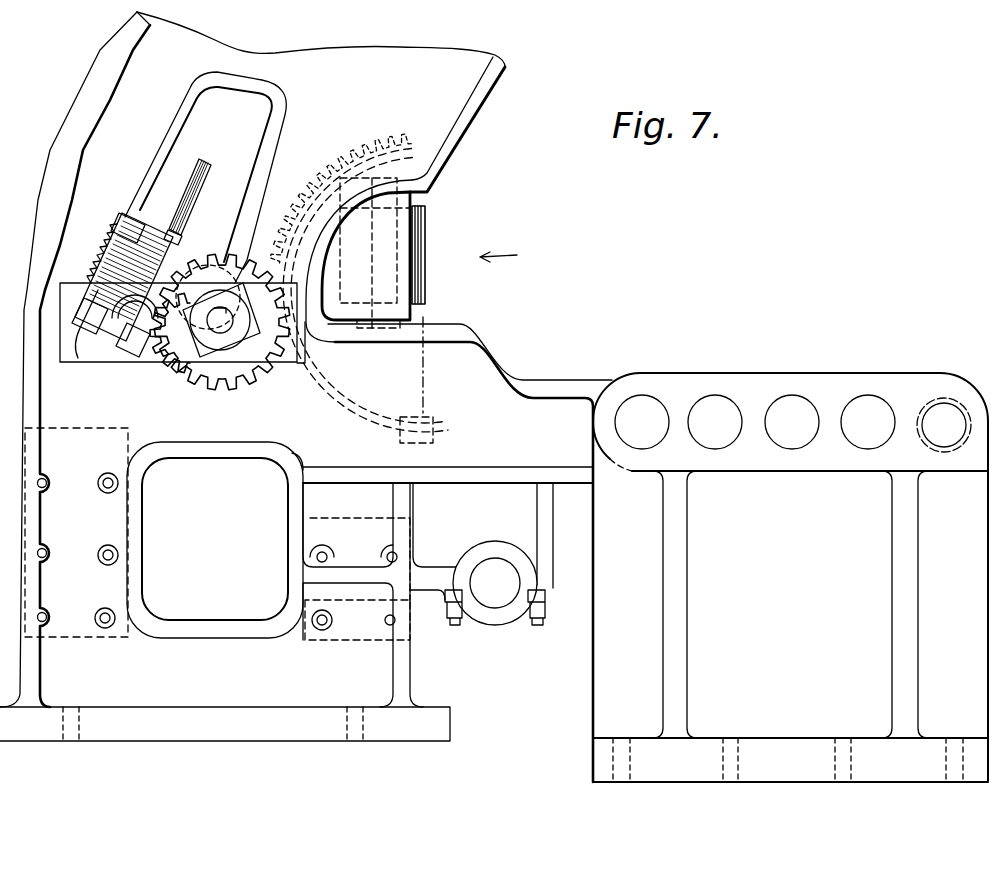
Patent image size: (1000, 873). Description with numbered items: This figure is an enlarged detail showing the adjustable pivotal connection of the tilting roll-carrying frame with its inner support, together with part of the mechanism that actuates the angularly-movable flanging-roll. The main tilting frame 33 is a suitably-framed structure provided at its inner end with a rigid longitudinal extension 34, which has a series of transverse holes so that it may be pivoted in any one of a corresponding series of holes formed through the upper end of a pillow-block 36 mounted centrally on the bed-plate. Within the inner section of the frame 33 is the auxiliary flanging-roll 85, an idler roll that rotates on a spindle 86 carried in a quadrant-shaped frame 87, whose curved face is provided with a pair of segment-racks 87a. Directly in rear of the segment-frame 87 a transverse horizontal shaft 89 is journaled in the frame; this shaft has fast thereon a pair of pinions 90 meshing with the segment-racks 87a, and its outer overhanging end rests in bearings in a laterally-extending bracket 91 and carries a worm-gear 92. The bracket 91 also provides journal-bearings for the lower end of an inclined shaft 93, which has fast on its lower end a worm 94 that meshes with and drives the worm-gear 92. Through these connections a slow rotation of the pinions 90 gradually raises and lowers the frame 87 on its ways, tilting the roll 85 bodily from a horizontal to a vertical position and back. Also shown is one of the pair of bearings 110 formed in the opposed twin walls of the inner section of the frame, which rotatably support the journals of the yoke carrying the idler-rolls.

The main tilting frame 33 is at (252, 376).
The inner longitudinal extension 34 is at (452, 553).
The pillow-block 36 is at (790, 577).
The auxiliary flanging-roll 85 is at (426, 247).
The spindle 86 is at (393, 273).
The quadrant-shaped frame 87 is at (403, 218).
The segment-racks 87a is at (359, 288).
The transverse horizontal shaft 89 is at (220, 318).
The pinions 90 is at (168, 350).
The laterally-extending bracket 91 is at (125, 285).
The worm-gear 92 is at (178, 335).
The inclined shaft 93 is at (182, 167).
The worm 94 is at (104, 290).
The bearings 110 is at (498, 608).